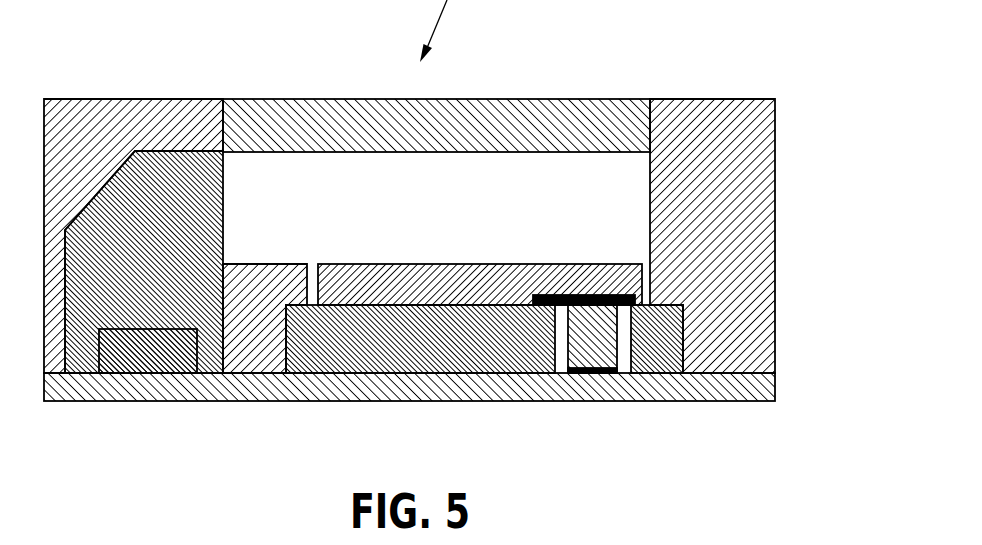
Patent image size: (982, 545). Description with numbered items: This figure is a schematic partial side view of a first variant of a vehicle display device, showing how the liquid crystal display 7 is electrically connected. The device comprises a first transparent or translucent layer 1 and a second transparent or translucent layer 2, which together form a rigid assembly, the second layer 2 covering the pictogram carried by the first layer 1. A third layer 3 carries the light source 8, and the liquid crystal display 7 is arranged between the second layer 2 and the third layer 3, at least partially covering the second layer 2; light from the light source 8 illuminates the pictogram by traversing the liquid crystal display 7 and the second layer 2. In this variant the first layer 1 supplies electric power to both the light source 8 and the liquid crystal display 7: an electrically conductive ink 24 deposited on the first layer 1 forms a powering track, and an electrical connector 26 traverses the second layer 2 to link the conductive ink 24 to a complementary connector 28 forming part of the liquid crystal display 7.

The first transparent or translucent layer 1 is at (725, 388).
The second transparent or translucent layer 2 is at (340, 340).
The third layer 3 is at (595, 118).
The liquid crystal display 7 is at (612, 279).
The light source 8 is at (122, 355).
The electrically conductive ink 24 is at (608, 372).
The electrical connector 26 is at (592, 340).
The complementary connector 28 is at (562, 295).